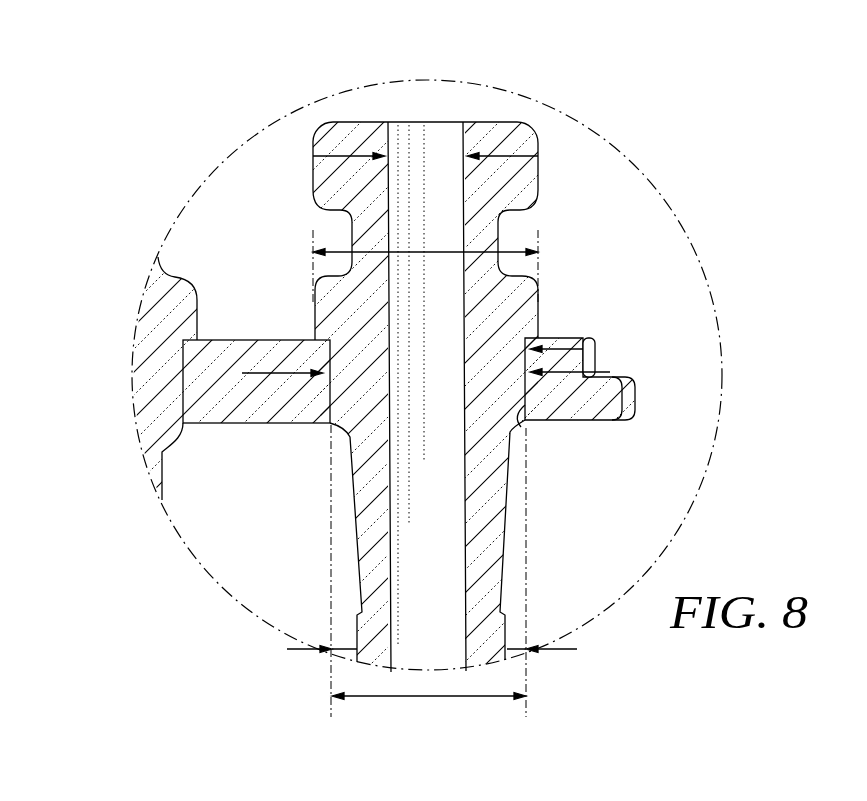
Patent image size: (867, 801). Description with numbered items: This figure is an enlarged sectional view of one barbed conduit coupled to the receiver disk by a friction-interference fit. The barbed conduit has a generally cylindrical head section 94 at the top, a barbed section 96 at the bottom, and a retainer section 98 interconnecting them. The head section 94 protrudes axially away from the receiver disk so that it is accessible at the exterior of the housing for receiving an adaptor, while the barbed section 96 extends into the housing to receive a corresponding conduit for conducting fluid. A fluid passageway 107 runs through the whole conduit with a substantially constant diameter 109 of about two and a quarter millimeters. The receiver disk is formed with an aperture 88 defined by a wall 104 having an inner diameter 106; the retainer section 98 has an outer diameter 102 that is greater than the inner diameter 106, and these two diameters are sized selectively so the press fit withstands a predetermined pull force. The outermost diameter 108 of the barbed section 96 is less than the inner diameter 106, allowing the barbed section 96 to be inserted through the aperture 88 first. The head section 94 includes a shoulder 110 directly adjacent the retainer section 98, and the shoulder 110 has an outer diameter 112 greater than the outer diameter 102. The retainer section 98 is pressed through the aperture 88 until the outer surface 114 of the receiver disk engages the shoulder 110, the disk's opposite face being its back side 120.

The aperture 88 is at (433, 400).
The head section 94 is at (468, 118).
The barbed section 96 is at (555, 558).
The retainer section 98 is at (433, 400).
The outer diameter 102 is at (610, 372).
The wall 104 is at (517, 422).
The inner diameter 106 is at (430, 696).
The fluid passageway 107 is at (418, 105).
The outermost diameter 108 is at (287, 649).
The diameter 109 is at (516, 158).
The shoulder 110 is at (548, 310).
The outer diameter 112 is at (433, 247).
The outer surface 114 is at (248, 340).
The back side 120 is at (223, 423).